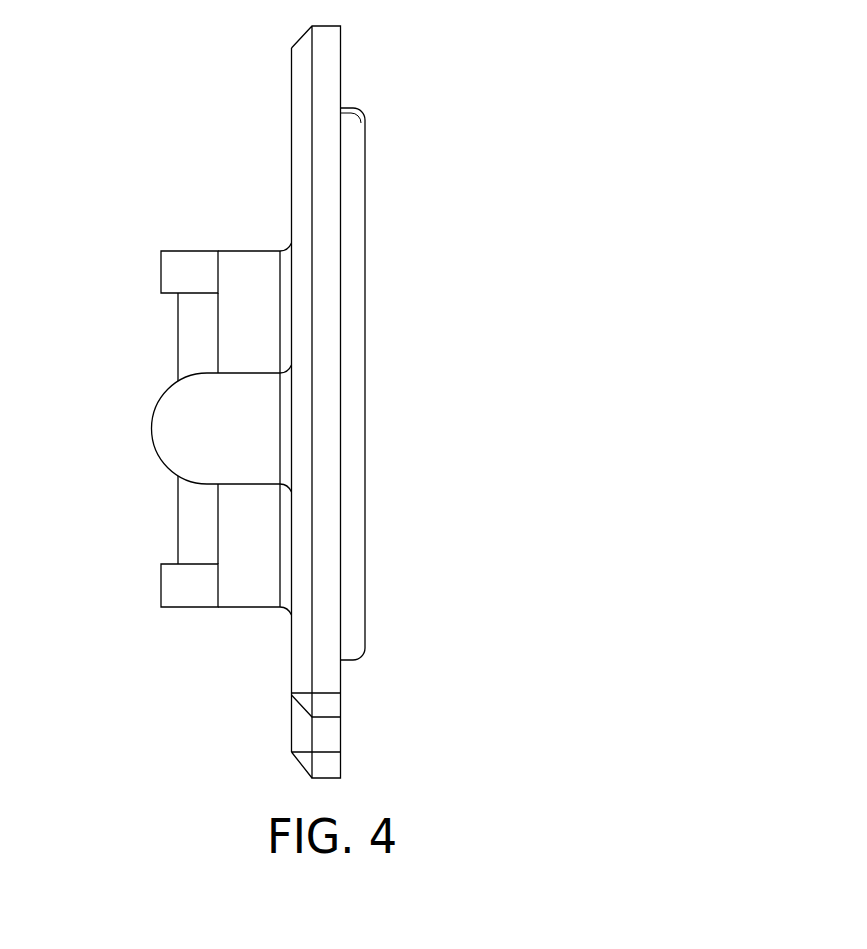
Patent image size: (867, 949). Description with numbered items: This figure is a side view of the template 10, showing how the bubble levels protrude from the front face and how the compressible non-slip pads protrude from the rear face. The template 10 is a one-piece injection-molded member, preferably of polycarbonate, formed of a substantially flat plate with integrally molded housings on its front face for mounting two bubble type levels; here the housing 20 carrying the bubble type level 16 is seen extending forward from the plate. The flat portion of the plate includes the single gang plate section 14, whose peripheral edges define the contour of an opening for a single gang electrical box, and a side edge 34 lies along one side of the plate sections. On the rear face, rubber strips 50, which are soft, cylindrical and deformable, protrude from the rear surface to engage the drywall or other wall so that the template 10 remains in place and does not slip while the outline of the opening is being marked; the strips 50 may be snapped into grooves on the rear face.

The template 10 is at (340, 398).
The single gang plate section 14 is at (307, 125).
The bubble type level 16 is at (180, 313).
The housing 20 is at (209, 430).
The side edge 34 is at (328, 617).
The rubber strips 50 is at (353, 112).